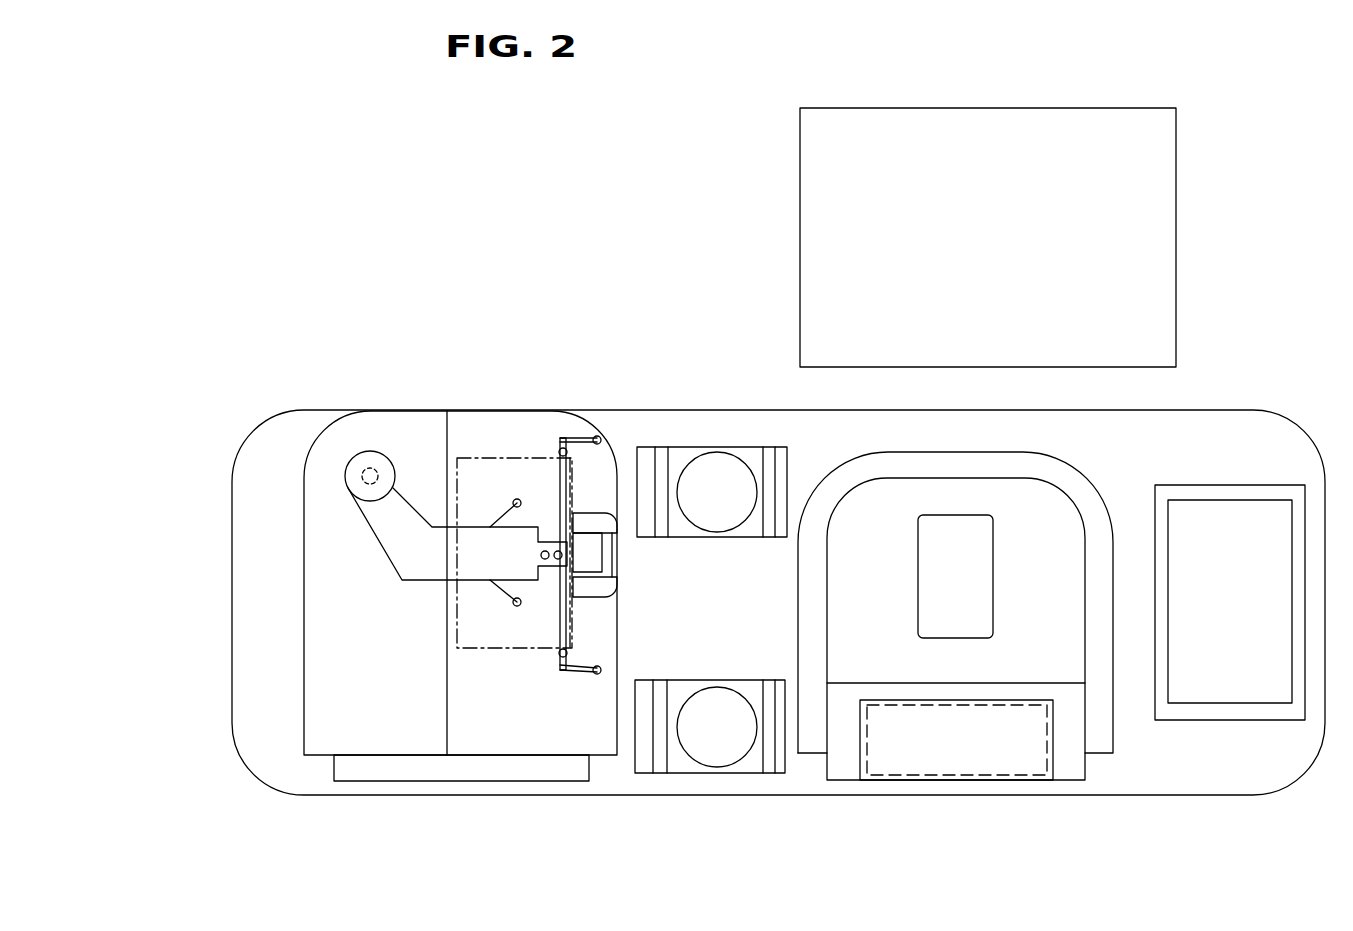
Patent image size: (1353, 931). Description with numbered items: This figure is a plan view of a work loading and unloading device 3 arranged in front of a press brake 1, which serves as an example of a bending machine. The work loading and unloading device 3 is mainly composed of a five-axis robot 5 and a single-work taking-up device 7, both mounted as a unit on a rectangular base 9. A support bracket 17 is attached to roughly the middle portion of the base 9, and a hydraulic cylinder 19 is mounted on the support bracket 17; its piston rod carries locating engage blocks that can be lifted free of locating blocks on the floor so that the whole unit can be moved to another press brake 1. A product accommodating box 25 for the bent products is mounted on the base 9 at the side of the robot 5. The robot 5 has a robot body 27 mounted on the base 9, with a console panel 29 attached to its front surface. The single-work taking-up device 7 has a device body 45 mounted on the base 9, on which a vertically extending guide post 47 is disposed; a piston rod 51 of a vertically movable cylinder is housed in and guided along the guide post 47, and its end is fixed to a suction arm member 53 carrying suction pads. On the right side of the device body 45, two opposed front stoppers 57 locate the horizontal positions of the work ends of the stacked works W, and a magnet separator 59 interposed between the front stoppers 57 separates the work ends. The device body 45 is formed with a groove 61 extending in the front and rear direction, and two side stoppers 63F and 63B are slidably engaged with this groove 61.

The press brake 1 is at (1178, 160).
The work loading and unloading device 3 is at (672, 356).
The robot 5 is at (1193, 384).
The single-work taking-up device 7 is at (409, 364).
The base 9 is at (237, 517).
The support bracket 17 is at (722, 537).
The hydraulic cylinder 19 is at (720, 465).
The product accommodating box 25 is at (1252, 490).
The robot body 27 is at (1100, 490).
The console panel 29 is at (978, 760).
The device body 45 is at (313, 605).
The guide post 47 is at (352, 462).
The piston rod 51 is at (375, 469).
The suction arm member 53 is at (421, 584).
The front stoppers 57 is at (598, 513).
The magnet separator 59 is at (597, 551).
The groove 61 is at (558, 622).
The side stopper 63B is at (560, 438).
The side stopper 63F is at (565, 654).
The works W is at (513, 650).